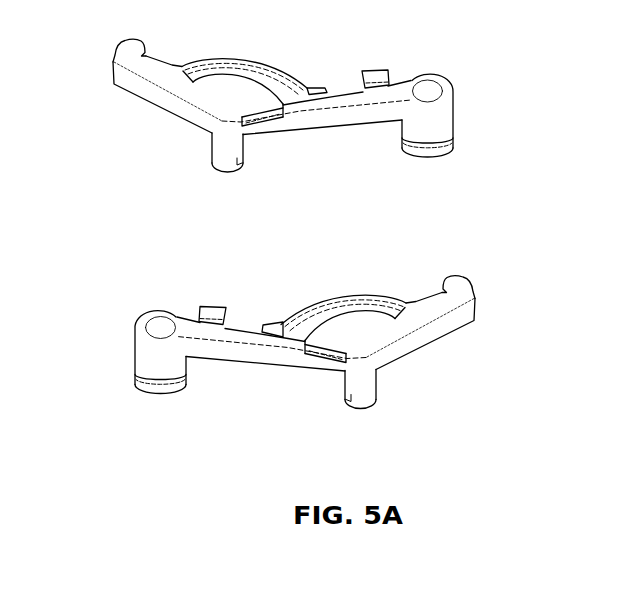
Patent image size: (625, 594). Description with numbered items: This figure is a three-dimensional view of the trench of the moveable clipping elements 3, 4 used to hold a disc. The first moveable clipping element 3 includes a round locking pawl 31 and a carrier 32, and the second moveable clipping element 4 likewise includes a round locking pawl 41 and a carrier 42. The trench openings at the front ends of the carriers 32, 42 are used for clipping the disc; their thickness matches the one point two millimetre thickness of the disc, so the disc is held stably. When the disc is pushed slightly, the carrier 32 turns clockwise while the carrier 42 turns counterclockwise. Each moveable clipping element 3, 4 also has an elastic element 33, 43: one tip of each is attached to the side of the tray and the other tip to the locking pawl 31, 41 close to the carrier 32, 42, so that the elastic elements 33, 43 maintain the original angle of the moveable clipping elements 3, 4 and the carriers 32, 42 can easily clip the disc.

The moveable clipping element 3 is at (237, 93).
The round locking pawl 31 is at (128, 51).
The carrier 32 is at (440, 128).
The elastic element 33 is at (213, 155).
The moveable clipping element 4 is at (352, 323).
The round locking pawl 41 is at (460, 283).
The carrier 42 is at (145, 365).
The elastic element 43 is at (367, 402).